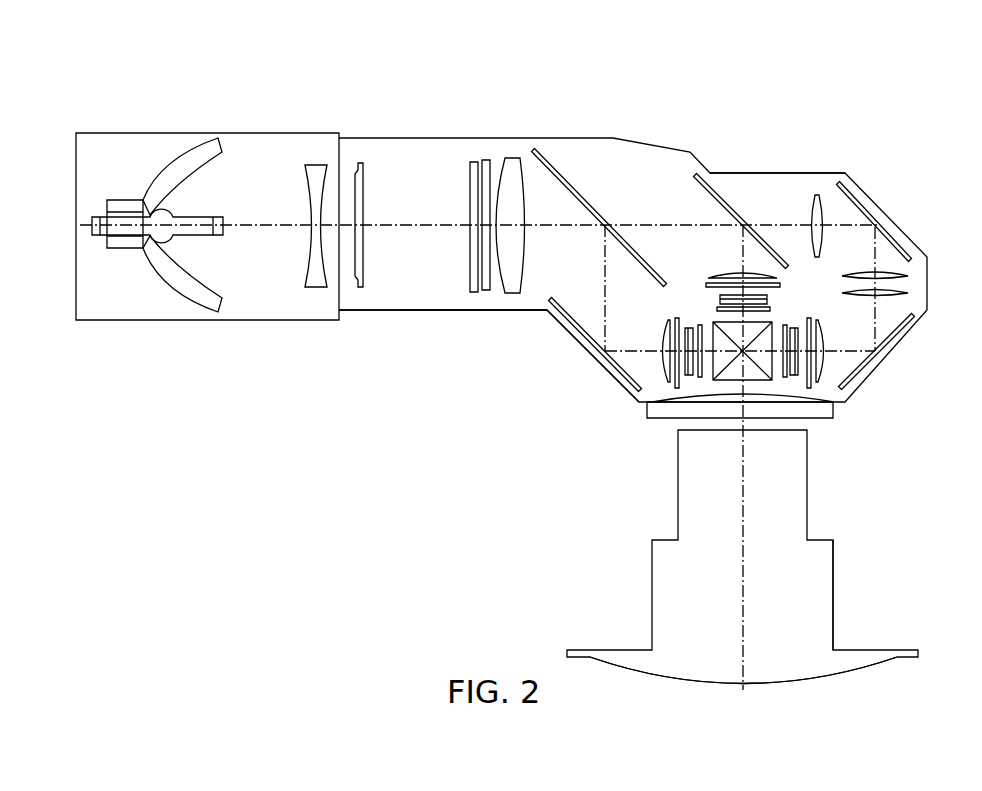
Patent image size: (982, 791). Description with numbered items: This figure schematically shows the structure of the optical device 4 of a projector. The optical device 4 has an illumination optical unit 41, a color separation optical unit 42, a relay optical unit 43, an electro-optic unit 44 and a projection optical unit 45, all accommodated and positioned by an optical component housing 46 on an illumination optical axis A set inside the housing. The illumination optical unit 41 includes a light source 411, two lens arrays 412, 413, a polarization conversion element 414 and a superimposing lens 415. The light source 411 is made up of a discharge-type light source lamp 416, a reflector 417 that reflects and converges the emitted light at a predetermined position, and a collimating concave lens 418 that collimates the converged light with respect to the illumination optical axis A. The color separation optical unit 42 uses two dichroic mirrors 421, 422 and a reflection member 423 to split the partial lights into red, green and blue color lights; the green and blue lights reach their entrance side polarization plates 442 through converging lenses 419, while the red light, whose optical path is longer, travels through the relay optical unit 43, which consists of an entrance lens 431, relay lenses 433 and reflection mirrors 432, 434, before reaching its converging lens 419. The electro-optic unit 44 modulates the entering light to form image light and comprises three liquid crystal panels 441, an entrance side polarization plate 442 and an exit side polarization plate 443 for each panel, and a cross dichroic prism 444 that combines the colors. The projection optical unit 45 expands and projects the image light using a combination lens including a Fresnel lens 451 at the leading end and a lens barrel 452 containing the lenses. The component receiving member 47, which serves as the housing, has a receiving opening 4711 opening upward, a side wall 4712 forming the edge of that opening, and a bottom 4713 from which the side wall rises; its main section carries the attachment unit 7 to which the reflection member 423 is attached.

The optical device 4 is at (461, 389).
The attachment unit 7 is at (588, 368).
The illumination optical unit 41 is at (480, 105).
The light source 411 is at (291, 38).
The lens array 412 is at (365, 197).
The lens array 413 is at (471, 161).
The polarization conversion element 414 is at (486, 162).
The superimposing lens 415 is at (516, 184).
The light source lamp 416 is at (198, 217).
The reflector 417 is at (207, 140).
The collimating concave lens 418 is at (316, 165).
The converging lens 419 is at (722, 272).
The color separation optical unit 42 is at (652, 165).
The dichroic mirror 421 is at (564, 181).
The dichroic mirror 422 is at (728, 205).
The reflection member 423 is at (574, 300).
The relay optical unit 43 is at (884, 196).
The entrance lens 431 is at (817, 194).
The reflection mirror 432 is at (903, 240).
The relay lens 433 is at (910, 291).
The reflection mirror 434 is at (902, 340).
The electro-optic unit 44 is at (815, 295).
The liquid crystal panel 441 is at (845, 463).
The entrance side polarization plate 442 is at (707, 283).
The exit side polarization plate 443 is at (718, 309).
The cross dichroic prism 444 is at (752, 380).
The projection optical unit 45 is at (835, 555).
The Fresnel lens 451 is at (850, 663).
The lens barrel 452 is at (835, 602).
The optical component housing 46 is at (757, 173).
The component receiving member 47 is at (585, 138).
The receiving opening 4711 is at (372, 310).
The side wall 4712 is at (510, 304).
The bottom 4713 is at (440, 304).
The illumination optical axis A is at (405, 228).